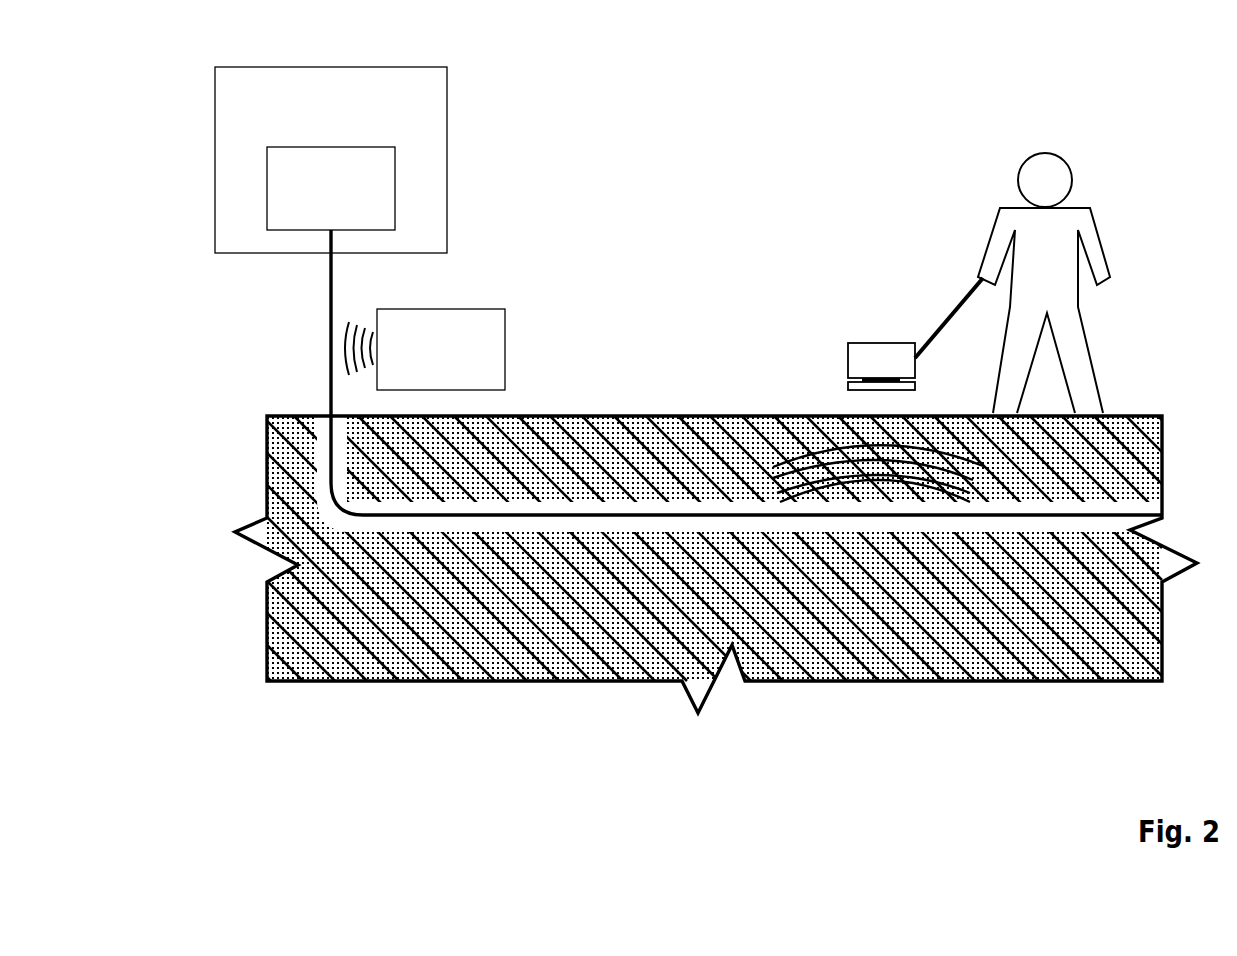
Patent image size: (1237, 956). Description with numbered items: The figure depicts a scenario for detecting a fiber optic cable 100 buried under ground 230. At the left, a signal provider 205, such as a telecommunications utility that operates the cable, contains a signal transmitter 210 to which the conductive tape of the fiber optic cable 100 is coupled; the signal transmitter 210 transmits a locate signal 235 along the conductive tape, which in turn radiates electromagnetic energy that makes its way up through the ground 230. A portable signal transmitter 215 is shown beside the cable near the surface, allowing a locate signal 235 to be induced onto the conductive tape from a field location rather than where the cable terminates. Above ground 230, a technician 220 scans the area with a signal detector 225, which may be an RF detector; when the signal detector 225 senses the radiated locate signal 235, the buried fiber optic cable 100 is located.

The fiber optic cable 100 is at (332, 295).
The signal provider 205 is at (316, 131).
The signal transmitter 210 is at (316, 217).
The signal transmitter 215 is at (426, 380).
The technician 220 is at (1031, 246).
The signal detector 225 is at (863, 372).
The ground 230 is at (968, 611).
The locate signal 235 is at (362, 308).